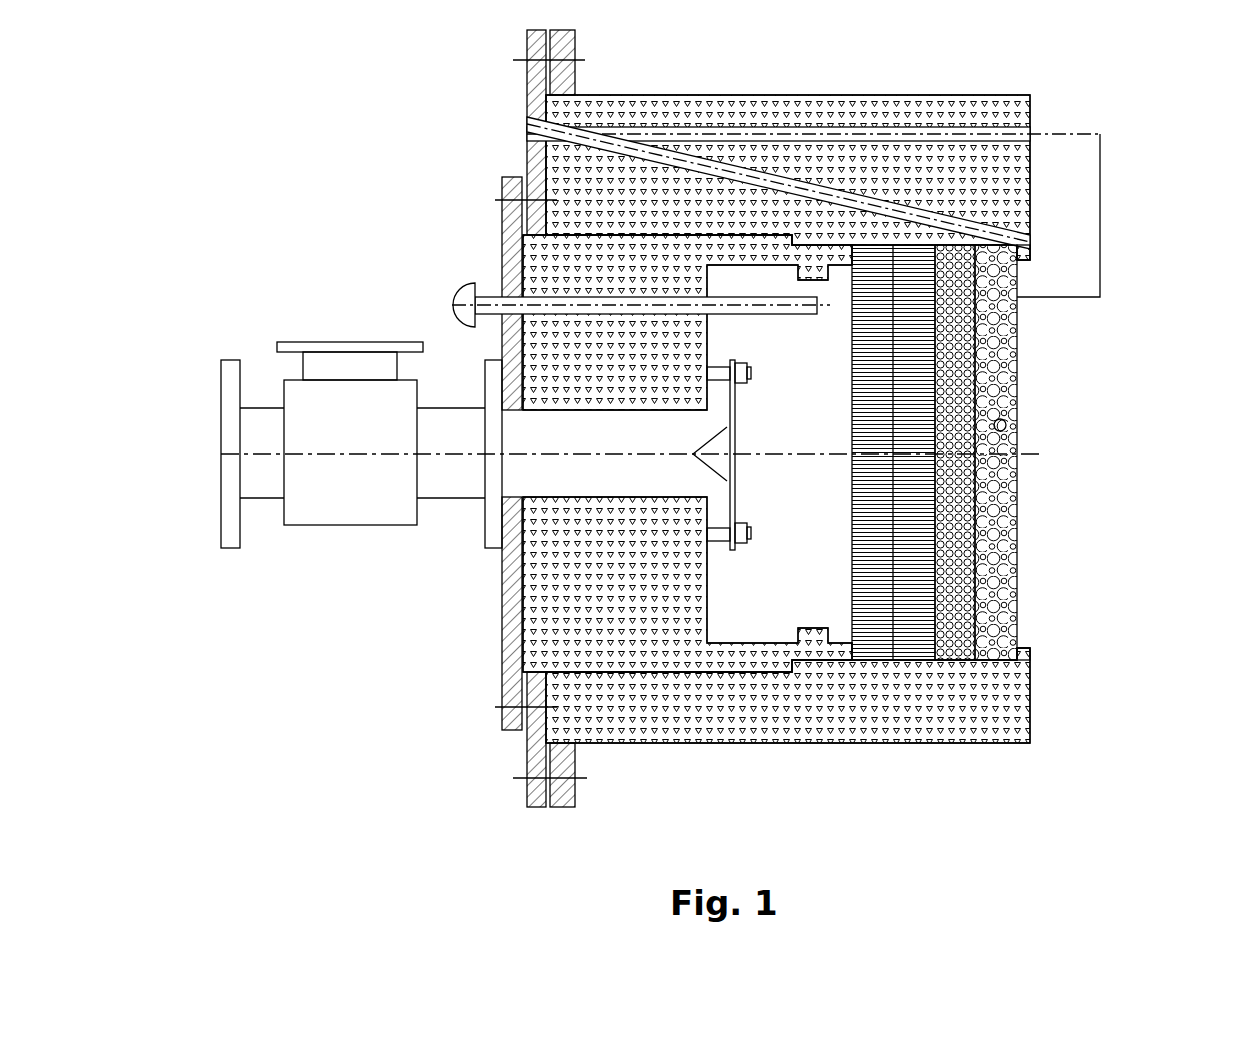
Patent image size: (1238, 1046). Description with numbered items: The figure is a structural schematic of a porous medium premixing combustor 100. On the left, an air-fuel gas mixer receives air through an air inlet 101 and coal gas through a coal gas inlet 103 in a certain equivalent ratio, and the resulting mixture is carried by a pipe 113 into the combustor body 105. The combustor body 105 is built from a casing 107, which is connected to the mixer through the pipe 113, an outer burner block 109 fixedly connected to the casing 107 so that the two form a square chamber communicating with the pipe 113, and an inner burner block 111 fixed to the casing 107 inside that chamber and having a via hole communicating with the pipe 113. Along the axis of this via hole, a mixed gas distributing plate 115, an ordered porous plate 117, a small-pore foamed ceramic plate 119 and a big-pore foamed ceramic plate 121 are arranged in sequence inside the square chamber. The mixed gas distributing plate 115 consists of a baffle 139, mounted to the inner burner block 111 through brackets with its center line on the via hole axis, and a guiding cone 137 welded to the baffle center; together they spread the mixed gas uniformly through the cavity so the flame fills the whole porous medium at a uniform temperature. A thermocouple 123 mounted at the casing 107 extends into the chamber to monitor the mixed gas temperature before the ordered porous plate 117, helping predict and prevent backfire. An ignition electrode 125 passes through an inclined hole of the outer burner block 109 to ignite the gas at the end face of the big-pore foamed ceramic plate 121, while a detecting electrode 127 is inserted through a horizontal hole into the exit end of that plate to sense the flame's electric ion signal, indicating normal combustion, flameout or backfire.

The porous medium premixing combustor 100 is at (818, 42).
The air inlet 101 is at (345, 353).
The coal gas inlet 103 is at (250, 440).
The combustor body 105 is at (470, 246).
The casing 107 is at (500, 220).
The outer burner block 109 is at (580, 713).
The inner burner block 111 is at (570, 620).
The pipe 113 is at (437, 498).
The mixed gas distributing plate 115 is at (790, 503).
The ordered porous plate 117 is at (1000, 630).
The small-pore foamed ceramic plate 119 is at (997, 365).
The big-pore foamed ceramic plate 121 is at (1010, 425).
The thermocouple 123 is at (455, 300).
The ignition electrode 125 is at (1027, 208).
The detecting electrode 127 is at (1003, 132).
The guiding cone 137 is at (715, 438).
The baffle 139 is at (735, 407).